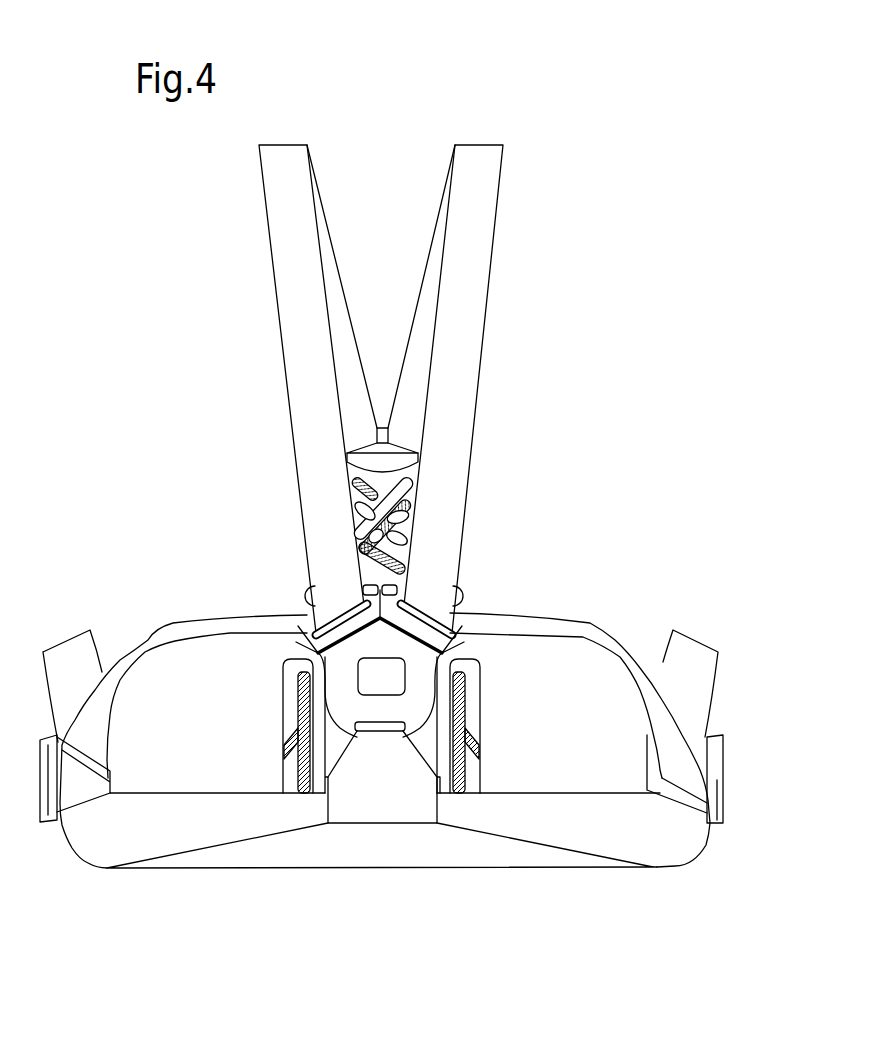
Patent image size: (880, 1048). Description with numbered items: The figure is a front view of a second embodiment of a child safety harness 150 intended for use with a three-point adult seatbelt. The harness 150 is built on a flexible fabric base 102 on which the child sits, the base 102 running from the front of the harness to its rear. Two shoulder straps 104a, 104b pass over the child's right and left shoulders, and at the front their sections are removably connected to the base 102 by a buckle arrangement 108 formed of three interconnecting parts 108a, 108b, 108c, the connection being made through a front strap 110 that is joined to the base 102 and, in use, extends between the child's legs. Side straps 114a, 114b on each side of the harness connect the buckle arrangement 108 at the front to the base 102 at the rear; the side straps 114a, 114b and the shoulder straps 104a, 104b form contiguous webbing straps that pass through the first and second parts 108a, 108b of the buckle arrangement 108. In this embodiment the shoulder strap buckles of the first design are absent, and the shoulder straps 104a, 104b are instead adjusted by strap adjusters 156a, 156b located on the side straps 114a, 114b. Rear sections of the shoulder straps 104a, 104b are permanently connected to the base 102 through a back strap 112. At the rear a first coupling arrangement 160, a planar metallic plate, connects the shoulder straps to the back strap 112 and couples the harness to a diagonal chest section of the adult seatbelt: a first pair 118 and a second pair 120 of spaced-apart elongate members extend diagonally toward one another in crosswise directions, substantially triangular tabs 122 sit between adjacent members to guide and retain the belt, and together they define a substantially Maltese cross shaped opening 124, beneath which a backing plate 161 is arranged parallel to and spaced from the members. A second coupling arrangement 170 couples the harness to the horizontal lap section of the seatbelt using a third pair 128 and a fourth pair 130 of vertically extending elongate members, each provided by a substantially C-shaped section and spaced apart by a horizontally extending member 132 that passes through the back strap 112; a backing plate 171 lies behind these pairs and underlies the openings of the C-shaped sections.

The flexible fabric base 102 is at (635, 847).
The shoulder strap 104a is at (305, 385).
The shoulder strap 104b is at (470, 348).
The buckle arrangement 108 is at (336, 672).
The first part of buckle arrangement 108a is at (318, 633).
The second part of buckle arrangement 108b is at (460, 633).
The third part of buckle arrangement 108c is at (440, 667).
The front strap 110 is at (370, 808).
The back strap 112 is at (425, 760).
The side strap 114a is at (126, 670).
The side strap 114b is at (638, 670).
The first pair of spaced-apart elongate members 118 is at (402, 505).
The second pair of spaced-apart elongate members 120 is at (350, 518).
The substantially triangular tab 122 is at (396, 482).
The Maltese cross shaped opening 124 is at (385, 558).
The third pair of spaced-apart elongate members 128 is at (287, 765).
The fourth pair of spaced-apart elongate members 130 is at (473, 690).
The horizontally extending member 132 is at (435, 735).
The child safety harness 150 is at (583, 217).
The strap adjuster 156a is at (48, 795).
The strap adjuster 156b is at (715, 780).
The first coupling arrangement 160 is at (348, 448).
The backing plate 161 is at (345, 490).
The second coupling arrangement 170 is at (317, 786).
The backing plate 171 is at (473, 733).